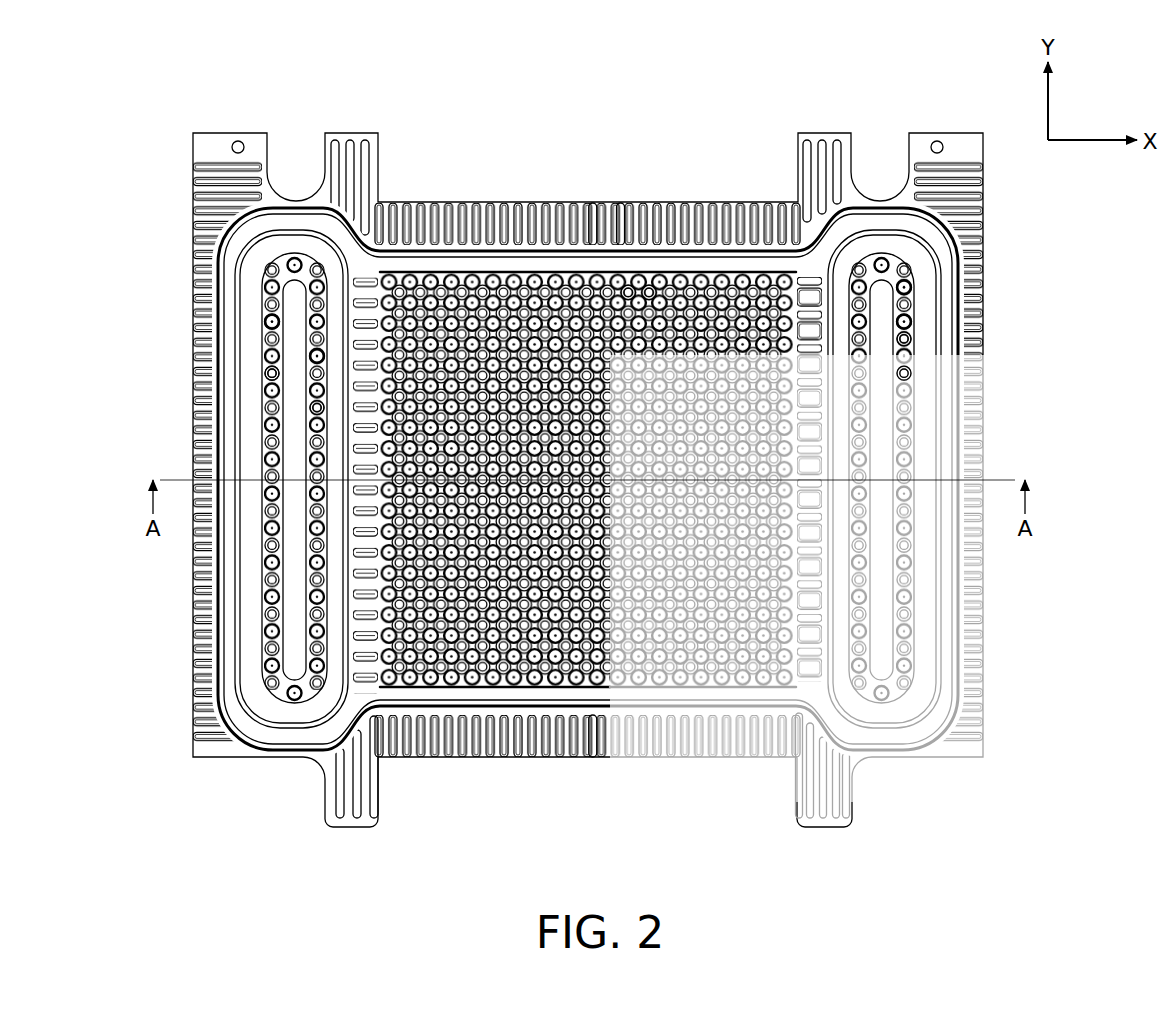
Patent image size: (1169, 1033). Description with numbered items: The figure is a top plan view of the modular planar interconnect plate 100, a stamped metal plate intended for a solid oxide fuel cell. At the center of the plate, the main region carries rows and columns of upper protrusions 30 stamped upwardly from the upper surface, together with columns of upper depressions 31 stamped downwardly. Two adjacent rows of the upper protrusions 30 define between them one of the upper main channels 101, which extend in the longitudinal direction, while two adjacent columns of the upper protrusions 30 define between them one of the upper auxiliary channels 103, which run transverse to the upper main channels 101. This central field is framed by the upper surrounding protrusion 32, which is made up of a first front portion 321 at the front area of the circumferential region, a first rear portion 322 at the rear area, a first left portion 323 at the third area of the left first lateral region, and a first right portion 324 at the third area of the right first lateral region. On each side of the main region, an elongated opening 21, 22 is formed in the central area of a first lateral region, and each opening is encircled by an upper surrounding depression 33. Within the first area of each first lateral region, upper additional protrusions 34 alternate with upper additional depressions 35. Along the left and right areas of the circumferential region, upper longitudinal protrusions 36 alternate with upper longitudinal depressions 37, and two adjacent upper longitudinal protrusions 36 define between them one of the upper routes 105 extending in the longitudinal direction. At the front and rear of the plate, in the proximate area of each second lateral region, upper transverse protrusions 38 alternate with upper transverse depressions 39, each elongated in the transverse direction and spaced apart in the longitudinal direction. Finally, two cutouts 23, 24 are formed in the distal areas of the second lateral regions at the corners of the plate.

The modular planar interconnect plate 100 is at (826, 106).
The opening 21 is at (291, 290).
The opening 22 is at (879, 290).
The cutout 23 is at (381, 160).
The cutout 24 is at (382, 800).
The upper protrusions 30 is at (573, 290).
The upper depressions 31 is at (630, 298).
The upper surrounding protrusion 32 is at (216, 283).
The upper surrounding depression 33 is at (250, 418).
The upper additional protrusions 34 is at (315, 355).
The upper additional depressions 35 is at (315, 407).
The upper longitudinal protrusions 36 is at (357, 440).
The upper longitudinal depressions 37 is at (352, 520).
The upper transverse protrusions 38 is at (462, 204).
The upper transverse depressions 39 is at (612, 204).
The upper main channels 101 is at (790, 563).
The upper auxiliary channels 103 is at (776, 278).
The upper routes 105 is at (360, 607).
The first front portion 321 is at (507, 256).
The first rear portion 322 is at (720, 702).
The first left portion 323 is at (222, 391).
The first right portion 324 is at (957, 420).